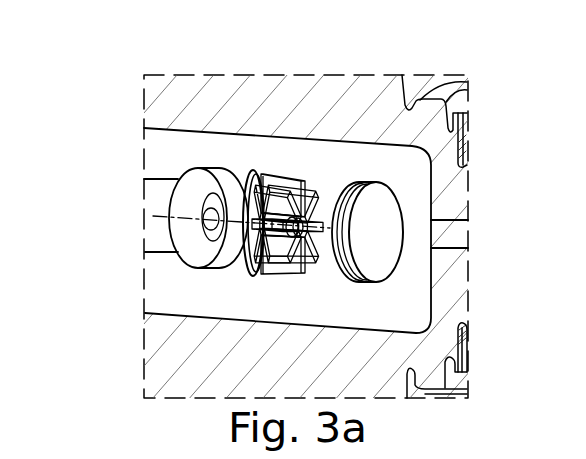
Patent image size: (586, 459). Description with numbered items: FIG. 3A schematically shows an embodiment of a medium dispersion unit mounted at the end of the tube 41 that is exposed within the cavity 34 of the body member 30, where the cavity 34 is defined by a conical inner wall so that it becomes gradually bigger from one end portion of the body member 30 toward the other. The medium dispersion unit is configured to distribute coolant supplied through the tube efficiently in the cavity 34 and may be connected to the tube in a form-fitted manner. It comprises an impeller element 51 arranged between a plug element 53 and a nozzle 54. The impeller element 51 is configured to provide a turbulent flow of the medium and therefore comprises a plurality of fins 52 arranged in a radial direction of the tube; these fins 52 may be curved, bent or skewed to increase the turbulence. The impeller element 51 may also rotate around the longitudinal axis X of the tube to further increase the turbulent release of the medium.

The body member 30 is at (257, 120).
The cavity 34 is at (417, 268).
The end of the tube 41 is at (193, 239).
The impeller element 51 is at (252, 262).
The fins 52 is at (306, 270).
The plug element 53 is at (369, 229).
The nozzle 54 is at (253, 186).
The longitudinal axis X is at (153, 216).